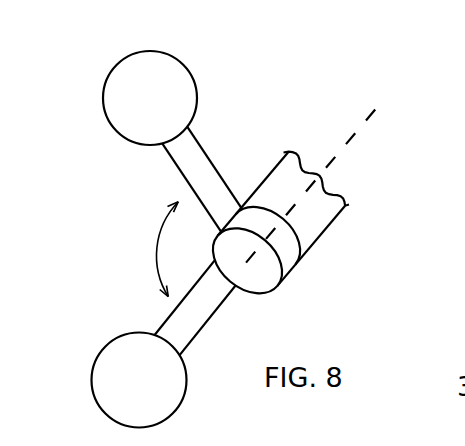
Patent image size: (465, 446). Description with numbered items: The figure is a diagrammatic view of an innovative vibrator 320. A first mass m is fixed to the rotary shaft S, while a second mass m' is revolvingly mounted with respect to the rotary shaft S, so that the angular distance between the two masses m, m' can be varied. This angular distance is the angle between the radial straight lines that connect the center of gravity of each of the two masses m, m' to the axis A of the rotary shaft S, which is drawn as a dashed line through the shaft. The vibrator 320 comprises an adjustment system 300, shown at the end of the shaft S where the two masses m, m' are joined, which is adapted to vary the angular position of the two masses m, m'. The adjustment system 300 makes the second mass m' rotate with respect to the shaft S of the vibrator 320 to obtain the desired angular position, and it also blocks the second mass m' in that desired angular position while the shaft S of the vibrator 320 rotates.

The vibrator 320 is at (251, 135).
The adjustment system 300 is at (282, 257).
The rotary shaft S is at (324, 205).
The axis A is at (324, 169).
The first mass m is at (107, 371).
The second mass m' is at (120, 141).